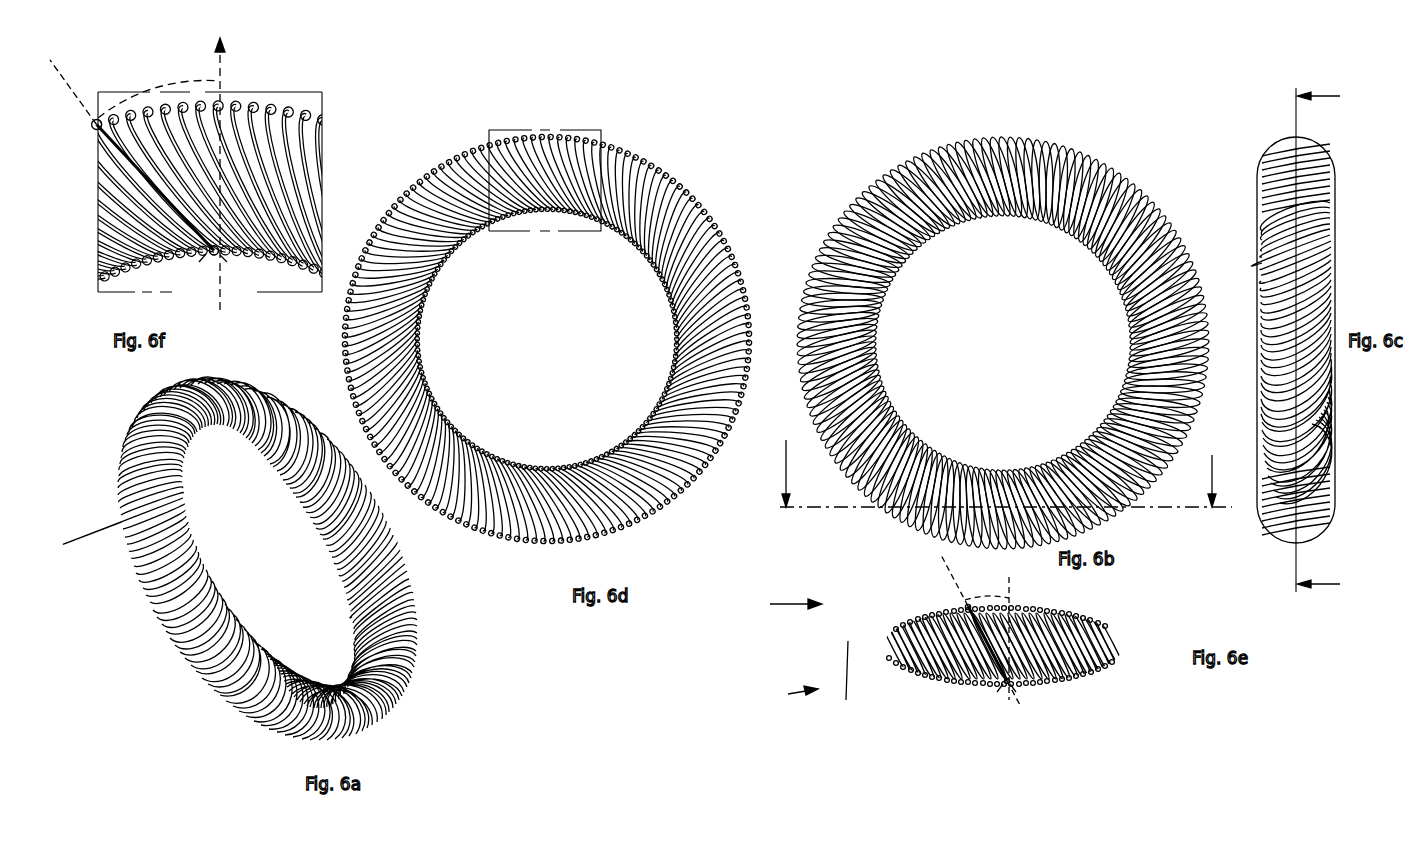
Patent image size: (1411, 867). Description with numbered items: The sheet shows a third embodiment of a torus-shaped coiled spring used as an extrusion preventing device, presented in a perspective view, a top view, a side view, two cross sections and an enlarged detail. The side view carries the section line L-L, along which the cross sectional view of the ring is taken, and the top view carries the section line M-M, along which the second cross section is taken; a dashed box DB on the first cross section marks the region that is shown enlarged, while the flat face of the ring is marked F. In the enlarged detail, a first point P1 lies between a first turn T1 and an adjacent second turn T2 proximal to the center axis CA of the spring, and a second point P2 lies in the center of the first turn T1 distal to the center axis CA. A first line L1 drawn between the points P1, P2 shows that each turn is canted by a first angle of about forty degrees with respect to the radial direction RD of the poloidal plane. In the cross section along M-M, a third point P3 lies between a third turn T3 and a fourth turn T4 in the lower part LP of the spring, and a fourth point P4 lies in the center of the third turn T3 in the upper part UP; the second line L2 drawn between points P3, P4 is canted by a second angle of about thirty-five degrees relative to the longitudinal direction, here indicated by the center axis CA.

In FIG. 6F, the first line L1 is at (118, 146).
In FIG. 6F, the radial direction RD is at (234, 172).
In FIG. 6F, the second point P2 is at (96, 122).
In FIG. 6F, the first point P1 is at (215, 256).
In FIG. 6F, the first turn T1 is at (206, 254).
In FIG. 6F, the second turn T2 is at (220, 255).
In FIG. 6D, the dashed box DB is at (546, 170).
In FIG. 6D, the flat face of ring F is at (545, 276).
In FIG. 6B, the line L- L is at (1006, 465).
In FIG. 6C, the line M- M is at (1332, 340).
In FIG. 6E, the second line L2 is at (982, 632).
In FIG. 6E, the center axis CA is at (1021, 635).
In FIG. 6E, the fourth point P4 is at (967, 607).
In FIG. 6E, the third point P3 is at (1013, 720).
In FIG. 6E, the fourth turn T4 is at (1004, 685).
In FIG. 6E, the third turn T3 is at (1010, 684).
In FIG. 6E, the upper part UP is at (780, 605).
In FIG. 6E, the lower part LP is at (792, 674).